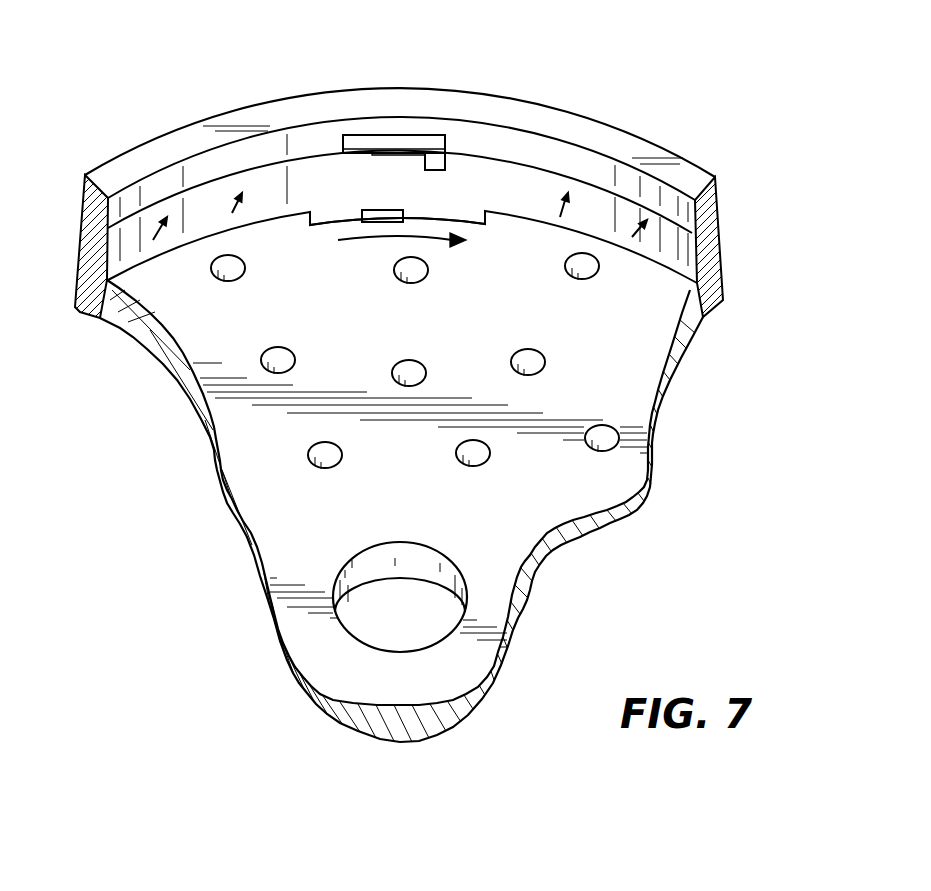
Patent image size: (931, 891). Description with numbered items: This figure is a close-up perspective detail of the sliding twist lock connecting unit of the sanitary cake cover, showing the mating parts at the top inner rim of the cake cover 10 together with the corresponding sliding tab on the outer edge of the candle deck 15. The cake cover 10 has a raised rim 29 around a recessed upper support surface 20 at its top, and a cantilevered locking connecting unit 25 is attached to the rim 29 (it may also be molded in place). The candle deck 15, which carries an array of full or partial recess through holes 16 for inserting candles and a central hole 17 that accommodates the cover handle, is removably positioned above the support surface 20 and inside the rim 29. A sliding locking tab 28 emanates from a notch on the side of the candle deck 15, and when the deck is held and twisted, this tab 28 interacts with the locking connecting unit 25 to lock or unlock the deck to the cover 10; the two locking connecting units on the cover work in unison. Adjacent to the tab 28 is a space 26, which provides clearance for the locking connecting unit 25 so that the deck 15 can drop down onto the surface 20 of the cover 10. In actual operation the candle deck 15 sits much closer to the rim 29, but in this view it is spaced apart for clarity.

The cake cover 10 is at (428, 184).
The candle deck 15 is at (668, 358).
The full or partial recess through holes 16 is at (417, 362).
The central hole 17 is at (413, 633).
The recessed upper support surface 20 is at (672, 255).
The locking connecting unit 25 is at (377, 140).
The space 26 is at (432, 210).
The sliding locking tab 28 is at (382, 205).
The raised rim 29 is at (193, 173).